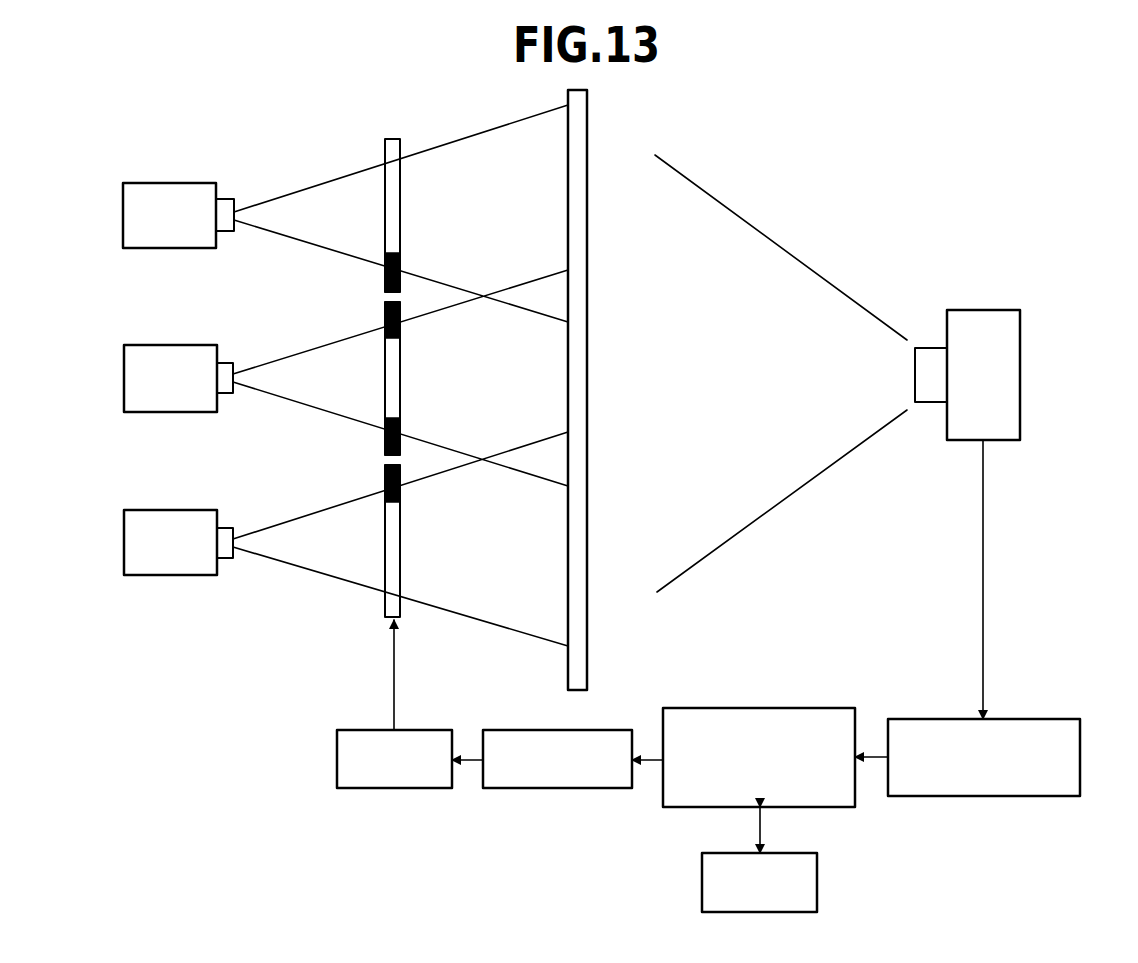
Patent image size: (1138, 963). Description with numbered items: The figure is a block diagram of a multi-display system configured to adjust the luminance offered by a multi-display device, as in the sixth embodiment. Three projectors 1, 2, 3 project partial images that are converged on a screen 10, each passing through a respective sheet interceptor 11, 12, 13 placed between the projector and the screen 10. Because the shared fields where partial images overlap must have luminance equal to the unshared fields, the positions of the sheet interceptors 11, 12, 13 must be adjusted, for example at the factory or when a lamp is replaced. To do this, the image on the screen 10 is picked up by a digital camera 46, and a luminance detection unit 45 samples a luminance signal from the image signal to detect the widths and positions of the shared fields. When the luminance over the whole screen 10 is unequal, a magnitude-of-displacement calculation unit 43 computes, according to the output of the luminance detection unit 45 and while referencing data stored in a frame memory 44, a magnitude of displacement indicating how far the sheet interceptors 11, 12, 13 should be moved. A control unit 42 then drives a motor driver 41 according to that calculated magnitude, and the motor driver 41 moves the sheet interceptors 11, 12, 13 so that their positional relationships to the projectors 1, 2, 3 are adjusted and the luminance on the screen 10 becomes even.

The projector 1 is at (134, 212).
The projector 2 is at (134, 376).
The projector 3 is at (134, 540).
The screen 10 is at (587, 147).
The sheet interceptor 11 is at (392, 198).
The sheet interceptor 12 is at (392, 378).
The sheet interceptor 13 is at (392, 552).
The motor driver 41 is at (422, 730).
The control unit 42 is at (590, 730).
The magnitude-of-displacement calculation unit 43 is at (822, 708).
The frame memory 44 is at (800, 853).
The luminance detection unit 45 is at (1030, 719).
The digital camera 46 is at (983, 310).